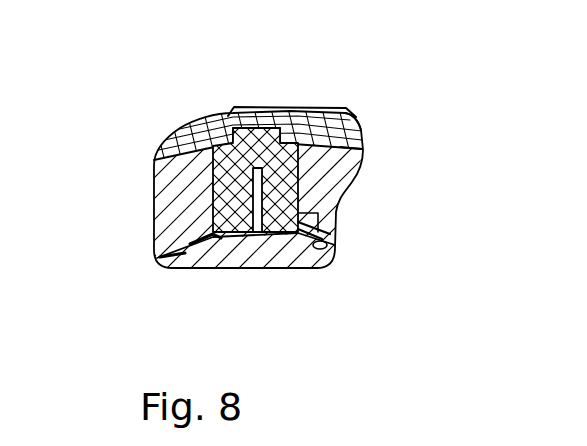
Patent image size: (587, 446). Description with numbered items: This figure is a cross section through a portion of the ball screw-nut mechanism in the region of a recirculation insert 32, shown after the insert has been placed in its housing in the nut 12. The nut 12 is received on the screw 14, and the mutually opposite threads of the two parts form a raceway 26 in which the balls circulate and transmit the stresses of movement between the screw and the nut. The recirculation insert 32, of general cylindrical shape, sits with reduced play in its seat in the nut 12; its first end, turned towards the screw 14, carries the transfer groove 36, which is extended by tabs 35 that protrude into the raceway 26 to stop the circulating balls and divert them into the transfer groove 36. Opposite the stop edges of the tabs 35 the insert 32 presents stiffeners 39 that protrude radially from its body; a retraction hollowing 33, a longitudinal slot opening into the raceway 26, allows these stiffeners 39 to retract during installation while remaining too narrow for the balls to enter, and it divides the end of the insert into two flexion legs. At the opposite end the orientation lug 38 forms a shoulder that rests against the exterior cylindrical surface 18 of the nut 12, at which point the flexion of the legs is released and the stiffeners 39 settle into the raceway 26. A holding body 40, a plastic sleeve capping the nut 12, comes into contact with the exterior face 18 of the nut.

The nut 12 is at (170, 177).
The screw 14 is at (245, 255).
The exterior cylindrical surface 18 is at (190, 143).
The raceway 26 is at (212, 236).
The recirculation insert 32 is at (354, 143).
The retraction hollowing 33 is at (258, 186).
The tabs 35 is at (200, 260).
The transfer groove 36 is at (262, 215).
The orientation lug 38 is at (284, 110).
The stiffeners 39 is at (333, 228).
The holding body 40 is at (353, 122).